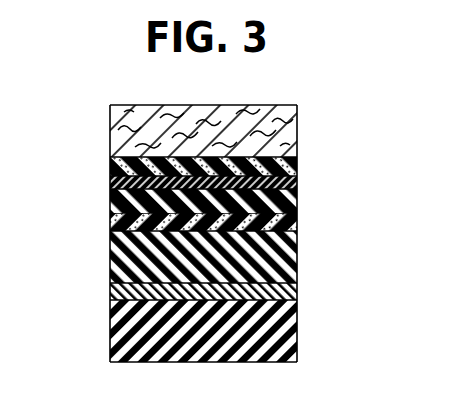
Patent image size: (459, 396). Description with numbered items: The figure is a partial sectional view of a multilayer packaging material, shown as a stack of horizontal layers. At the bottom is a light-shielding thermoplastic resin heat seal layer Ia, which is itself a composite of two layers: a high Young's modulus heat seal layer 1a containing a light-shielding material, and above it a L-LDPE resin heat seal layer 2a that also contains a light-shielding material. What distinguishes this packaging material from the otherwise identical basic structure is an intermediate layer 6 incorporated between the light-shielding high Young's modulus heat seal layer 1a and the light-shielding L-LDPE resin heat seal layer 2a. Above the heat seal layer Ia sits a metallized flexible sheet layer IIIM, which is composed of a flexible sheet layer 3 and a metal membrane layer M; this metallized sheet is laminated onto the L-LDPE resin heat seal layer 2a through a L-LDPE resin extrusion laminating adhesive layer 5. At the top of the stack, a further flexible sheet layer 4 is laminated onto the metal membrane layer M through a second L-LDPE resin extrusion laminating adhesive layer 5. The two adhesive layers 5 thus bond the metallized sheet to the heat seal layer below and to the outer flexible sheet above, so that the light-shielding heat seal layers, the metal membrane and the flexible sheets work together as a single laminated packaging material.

The flexible sheet layer 4 is at (297, 131).
The L-LDPE resin extrusion laminating adhesive layer 5 is at (110, 173).
The metal membrane layer M is at (297, 183).
The flexible sheet layer 3 is at (232, 206).
The metallized flexible sheet layer IIIM is at (269, 194).
The L-LDPE resin heat seal layer 2a is at (297, 256).
The intermediate layer 6 is at (297, 289).
The high Young's modulus heat seal layer 1a is at (242, 331).
The light-shielding thermoplastic resin heat seal layer Ia is at (263, 296).